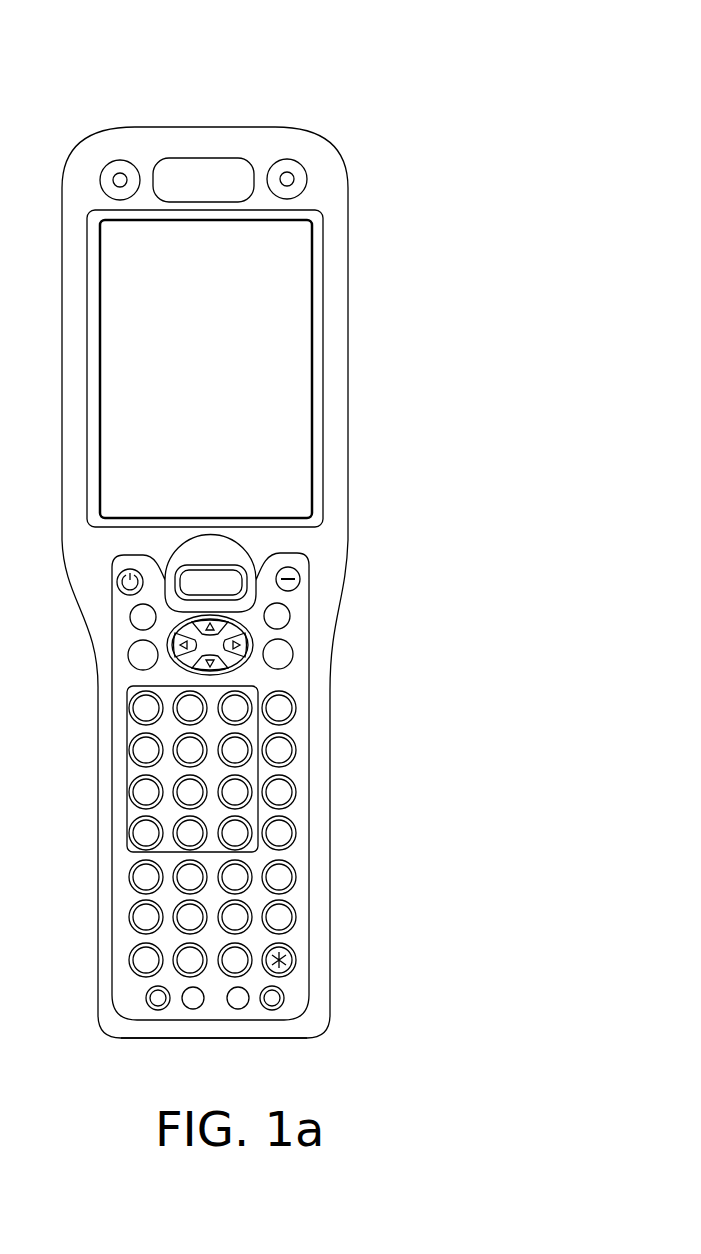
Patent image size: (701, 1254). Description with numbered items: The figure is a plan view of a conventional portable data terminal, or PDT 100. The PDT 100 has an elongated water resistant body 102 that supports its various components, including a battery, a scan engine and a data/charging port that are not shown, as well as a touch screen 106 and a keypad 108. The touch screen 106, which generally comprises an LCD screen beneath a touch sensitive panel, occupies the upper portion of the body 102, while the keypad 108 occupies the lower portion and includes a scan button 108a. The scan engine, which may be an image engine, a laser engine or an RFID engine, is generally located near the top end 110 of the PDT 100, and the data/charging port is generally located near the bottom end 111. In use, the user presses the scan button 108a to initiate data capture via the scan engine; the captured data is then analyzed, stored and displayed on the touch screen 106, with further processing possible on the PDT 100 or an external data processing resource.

The portable data terminal 100 is at (341, 86).
The elongated water resistant body 102 is at (359, 310).
The touch screen 106 is at (232, 360).
The keypad 108 is at (300, 682).
The scan button 108a is at (250, 555).
The top end 110 is at (212, 123).
The bottom end 111 is at (230, 1040).